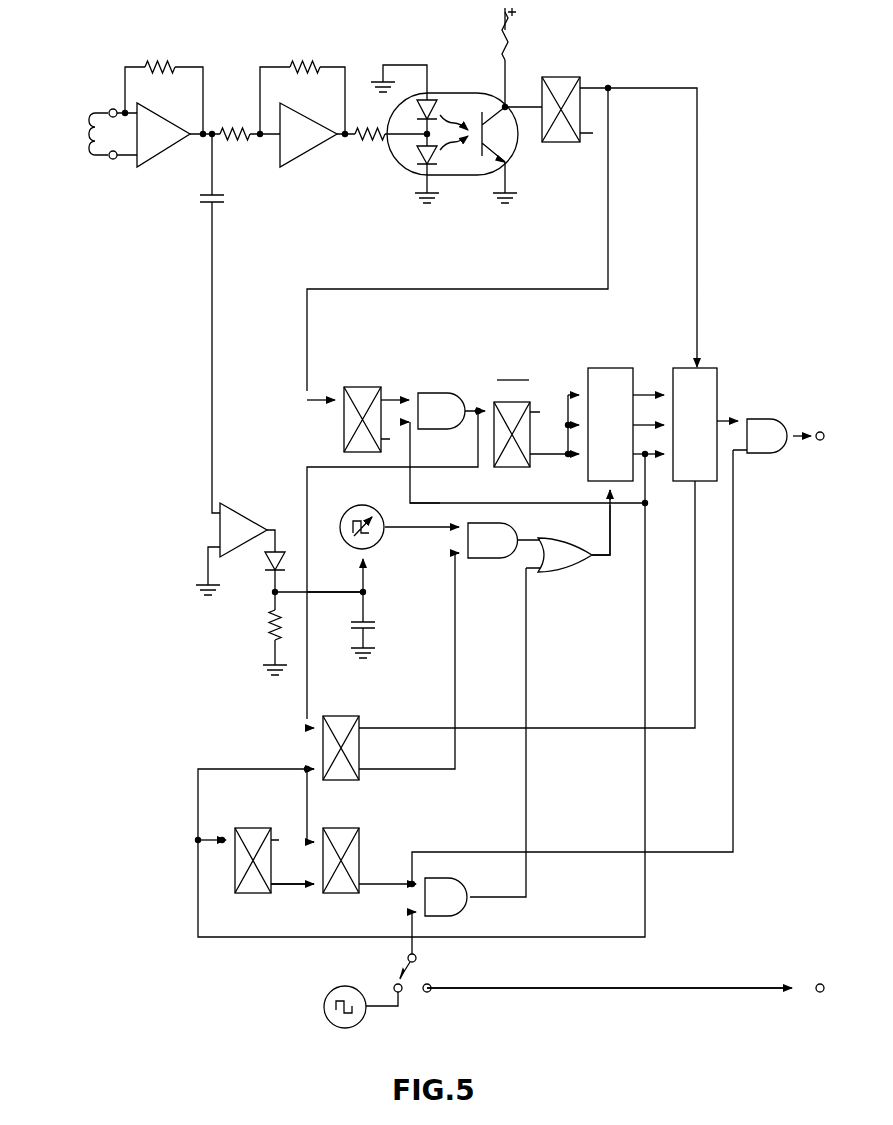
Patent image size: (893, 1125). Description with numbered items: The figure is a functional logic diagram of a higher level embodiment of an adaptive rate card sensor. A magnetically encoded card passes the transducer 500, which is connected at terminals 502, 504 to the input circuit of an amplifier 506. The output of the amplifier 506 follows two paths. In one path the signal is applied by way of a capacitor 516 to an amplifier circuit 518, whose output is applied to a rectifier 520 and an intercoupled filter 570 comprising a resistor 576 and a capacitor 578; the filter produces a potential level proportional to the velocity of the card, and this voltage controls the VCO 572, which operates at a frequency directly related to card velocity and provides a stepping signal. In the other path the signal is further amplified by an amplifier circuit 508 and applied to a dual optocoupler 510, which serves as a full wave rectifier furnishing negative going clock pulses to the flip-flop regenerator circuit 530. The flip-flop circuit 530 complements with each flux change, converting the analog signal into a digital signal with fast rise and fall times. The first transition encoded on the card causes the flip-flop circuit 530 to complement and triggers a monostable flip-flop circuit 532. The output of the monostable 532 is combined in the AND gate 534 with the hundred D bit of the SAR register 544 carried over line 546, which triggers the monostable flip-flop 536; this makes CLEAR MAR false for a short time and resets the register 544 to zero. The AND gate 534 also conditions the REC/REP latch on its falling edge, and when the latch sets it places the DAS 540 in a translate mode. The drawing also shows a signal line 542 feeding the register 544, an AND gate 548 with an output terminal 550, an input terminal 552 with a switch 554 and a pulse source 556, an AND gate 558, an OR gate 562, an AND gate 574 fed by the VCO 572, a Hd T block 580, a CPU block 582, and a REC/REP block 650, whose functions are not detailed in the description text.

The transducer 500 is at (90, 152).
The terminal 502 is at (111, 110).
The terminal 504 is at (114, 160).
The amplifier 506 is at (165, 152).
The amplifier circuit 508 is at (295, 154).
The dual optocoupler 510 is at (398, 160).
The capacitor 516 is at (218, 207).
The amplifier circuit 518 is at (240, 515).
The rectifier 520 is at (265, 568).
The flip-flop regenerator circuit 530 is at (550, 143).
The monostable flip-flop circuit 532 is at (371, 387).
The AND gate 534 is at (450, 393).
The monostable flip-flop 536 is at (510, 468).
The DAS 540 is at (717, 400).
The line 542 is at (610, 554).
The SAR register 544 is at (588, 478).
The line 546 is at (433, 503).
The AND gate 548 is at (755, 453).
The output terminal 550 is at (820, 432).
The input terminal 552 is at (820, 984).
The switch 554 is at (410, 966).
The pulse generator 556 is at (324, 1009).
The AND gate 558 is at (460, 912).
The OR gate 562 is at (548, 572).
The filter 570 is at (339, 634).
The VCO 572 is at (357, 506).
The AND gate 574 is at (475, 558).
The resistor 576 is at (268, 627).
The capacitor 578 is at (370, 622).
The head timing circuit Hd T 580 is at (235, 850).
The central processing unit CPU 582 is at (337, 894).
The record/reproduce circuit REC/REP 650 is at (322, 748).